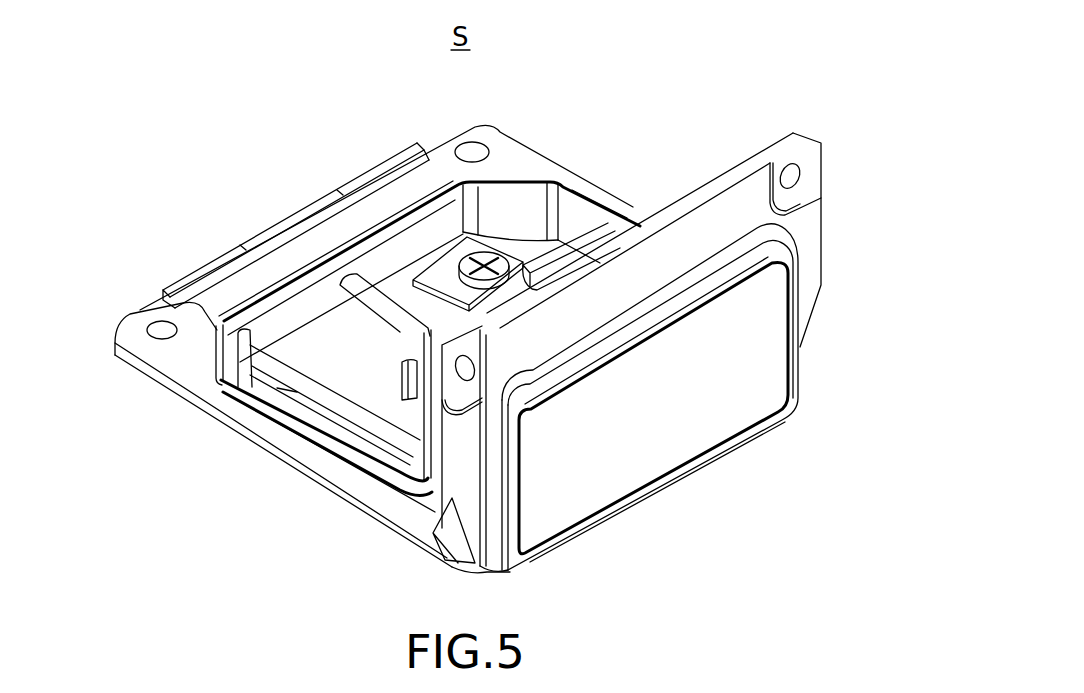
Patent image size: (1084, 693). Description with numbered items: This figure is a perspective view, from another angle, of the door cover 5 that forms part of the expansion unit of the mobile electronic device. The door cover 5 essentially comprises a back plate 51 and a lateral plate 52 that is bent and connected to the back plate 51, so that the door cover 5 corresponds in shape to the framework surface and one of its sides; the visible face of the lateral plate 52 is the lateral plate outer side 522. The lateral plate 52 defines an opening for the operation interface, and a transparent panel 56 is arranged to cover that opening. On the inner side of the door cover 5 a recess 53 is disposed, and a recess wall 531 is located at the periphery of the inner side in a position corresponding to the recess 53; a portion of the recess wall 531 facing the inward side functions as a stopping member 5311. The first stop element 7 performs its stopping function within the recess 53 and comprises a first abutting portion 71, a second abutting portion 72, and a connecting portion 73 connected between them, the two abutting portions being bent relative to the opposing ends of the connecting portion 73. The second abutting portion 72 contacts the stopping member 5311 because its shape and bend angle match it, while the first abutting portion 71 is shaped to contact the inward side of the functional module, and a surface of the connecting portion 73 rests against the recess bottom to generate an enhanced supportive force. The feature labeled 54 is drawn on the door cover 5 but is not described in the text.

The door cover 5 is at (222, 432).
The back plate 51 is at (197, 397).
The lateral plate 52 is at (808, 172).
The lateral plate outer side 522 is at (792, 325).
The recess 53 is at (512, 212).
The recess wall 531 is at (580, 217).
The stopping member 5311 is at (380, 258).
The mounting tab 54 is at (140, 316).
The transparent panel 56 is at (680, 470).
The first stop element 7 is at (318, 411).
The first abutting portion 71 is at (380, 455).
The second abutting portion 72 is at (297, 307).
The connecting portion 73 is at (340, 425).